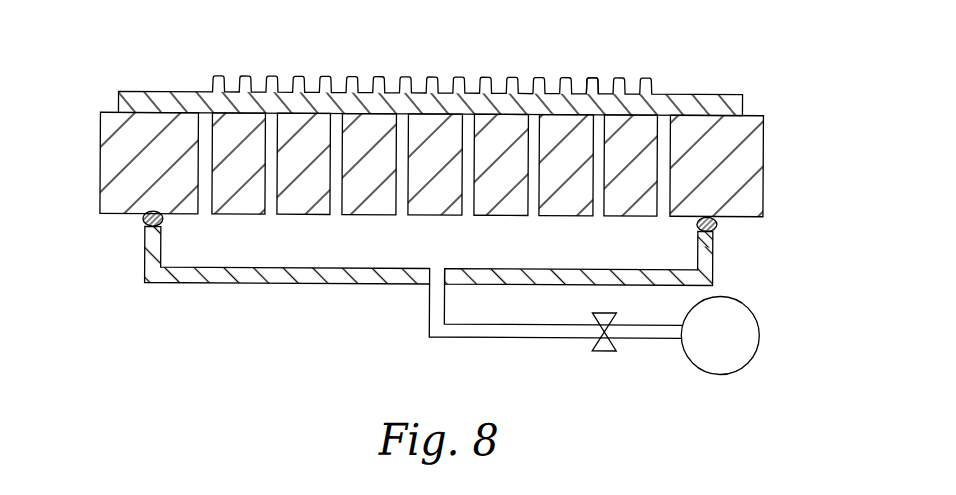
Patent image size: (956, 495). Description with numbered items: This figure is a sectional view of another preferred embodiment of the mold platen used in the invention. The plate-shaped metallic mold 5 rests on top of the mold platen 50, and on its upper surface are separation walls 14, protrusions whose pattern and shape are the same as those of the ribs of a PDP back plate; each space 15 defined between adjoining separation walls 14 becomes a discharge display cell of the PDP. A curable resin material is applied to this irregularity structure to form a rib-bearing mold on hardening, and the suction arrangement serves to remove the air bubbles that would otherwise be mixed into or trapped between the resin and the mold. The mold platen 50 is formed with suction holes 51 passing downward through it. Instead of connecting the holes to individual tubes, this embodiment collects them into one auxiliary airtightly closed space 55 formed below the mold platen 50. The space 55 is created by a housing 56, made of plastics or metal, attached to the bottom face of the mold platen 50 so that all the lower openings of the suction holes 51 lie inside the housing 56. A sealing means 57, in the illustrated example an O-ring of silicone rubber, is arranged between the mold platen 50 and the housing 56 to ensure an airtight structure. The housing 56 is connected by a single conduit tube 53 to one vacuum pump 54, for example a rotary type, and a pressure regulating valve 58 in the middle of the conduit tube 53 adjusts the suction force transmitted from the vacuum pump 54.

The metallic mold 5 is at (709, 100).
The separation walls 14 is at (591, 84).
The space 15 is at (526, 84).
The mold platen 50 is at (752, 170).
The suction holes 51 is at (270, 160).
The conduit tube 53 is at (507, 334).
The vacuum pump 54 is at (686, 362).
The auxiliary airtightly closed space 55 is at (450, 251).
The housing 56 is at (262, 278).
The sealing means 57 is at (717, 228).
The pressure regulating valve 58 is at (603, 350).